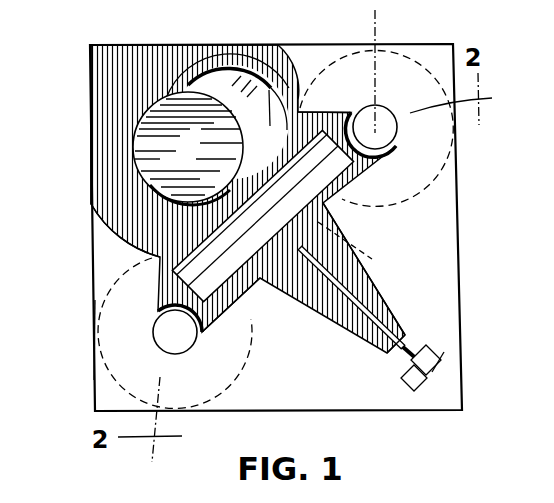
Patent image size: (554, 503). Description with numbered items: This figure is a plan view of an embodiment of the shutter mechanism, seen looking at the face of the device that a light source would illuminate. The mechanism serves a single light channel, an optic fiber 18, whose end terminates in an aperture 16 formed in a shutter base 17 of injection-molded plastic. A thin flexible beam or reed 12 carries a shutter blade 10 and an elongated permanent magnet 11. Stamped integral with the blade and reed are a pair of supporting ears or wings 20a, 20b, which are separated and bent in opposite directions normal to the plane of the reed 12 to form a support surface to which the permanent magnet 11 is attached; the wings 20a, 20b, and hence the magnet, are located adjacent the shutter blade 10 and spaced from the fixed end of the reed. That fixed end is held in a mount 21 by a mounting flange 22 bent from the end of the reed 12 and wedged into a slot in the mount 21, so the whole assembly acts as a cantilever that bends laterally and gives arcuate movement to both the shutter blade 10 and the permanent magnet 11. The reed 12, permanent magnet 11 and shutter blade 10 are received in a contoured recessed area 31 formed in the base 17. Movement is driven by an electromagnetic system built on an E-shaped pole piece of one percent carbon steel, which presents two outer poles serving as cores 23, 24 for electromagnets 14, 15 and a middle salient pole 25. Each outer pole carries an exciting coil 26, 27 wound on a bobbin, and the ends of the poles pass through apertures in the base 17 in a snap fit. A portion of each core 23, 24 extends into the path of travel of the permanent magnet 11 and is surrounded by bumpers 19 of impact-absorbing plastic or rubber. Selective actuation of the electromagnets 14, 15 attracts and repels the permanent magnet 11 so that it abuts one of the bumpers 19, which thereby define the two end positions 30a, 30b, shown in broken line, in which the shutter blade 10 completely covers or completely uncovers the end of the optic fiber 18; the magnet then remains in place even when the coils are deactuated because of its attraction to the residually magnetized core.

The shutter blade 10 is at (168, 152).
The permanent magnet 11 is at (330, 202).
The reed 12 is at (368, 290).
The electromagnet 14 is at (88, 357).
The electromagnet 15 is at (411, 34).
The aperture 16 is at (262, 56).
The shutter base 17 is at (461, 215).
The optic fiber 18 is at (281, 66).
The bumpers 19 is at (377, 45).
The wing 20a is at (261, 284).
The wing 20b is at (329, 93).
The mount 21 is at (443, 366).
The mounting flange 22 is at (427, 396).
The core 23 is at (164, 342).
The core 24 is at (382, 118).
The middle salient pole 25 is at (358, 244).
The exciting coil 26 is at (244, 379).
The exciting coil 27 is at (459, 176).
The end position 30a is at (97, 214).
The end position 30b is at (203, 45).
The contoured recessed area 31 is at (119, 47).